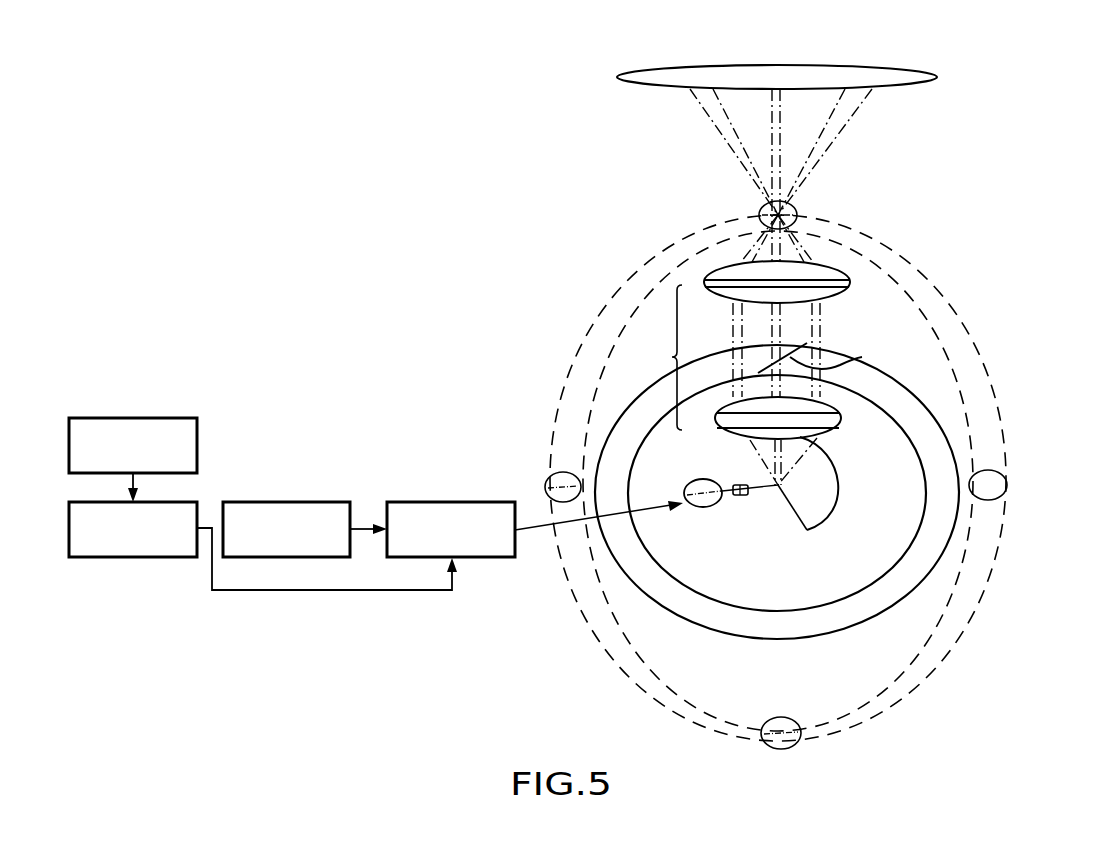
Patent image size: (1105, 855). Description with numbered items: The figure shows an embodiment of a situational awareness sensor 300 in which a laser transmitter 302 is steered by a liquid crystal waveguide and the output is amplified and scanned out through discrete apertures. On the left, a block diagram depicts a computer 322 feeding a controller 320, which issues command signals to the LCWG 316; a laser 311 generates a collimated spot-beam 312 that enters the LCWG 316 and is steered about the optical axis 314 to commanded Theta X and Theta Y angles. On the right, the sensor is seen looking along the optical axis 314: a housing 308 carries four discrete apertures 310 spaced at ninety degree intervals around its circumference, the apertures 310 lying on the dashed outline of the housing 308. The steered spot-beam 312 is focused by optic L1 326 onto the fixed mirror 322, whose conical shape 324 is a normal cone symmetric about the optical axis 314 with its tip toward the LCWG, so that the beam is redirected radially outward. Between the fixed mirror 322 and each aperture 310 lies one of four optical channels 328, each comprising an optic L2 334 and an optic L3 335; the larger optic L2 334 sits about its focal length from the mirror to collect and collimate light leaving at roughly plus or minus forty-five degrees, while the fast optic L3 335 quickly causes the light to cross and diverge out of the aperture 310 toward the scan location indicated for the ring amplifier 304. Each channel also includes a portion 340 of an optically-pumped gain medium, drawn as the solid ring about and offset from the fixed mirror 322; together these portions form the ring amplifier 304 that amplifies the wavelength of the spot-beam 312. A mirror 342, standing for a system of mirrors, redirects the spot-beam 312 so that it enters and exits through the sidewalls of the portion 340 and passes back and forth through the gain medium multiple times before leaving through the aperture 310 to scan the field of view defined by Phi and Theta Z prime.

The situational awareness sensor 300 is at (298, 252).
The laser transmitter 302 is at (183, 337).
The ring amplifier 304 is at (897, 320).
The housing 308 is at (598, 303).
The apertures 310 is at (798, 208).
The laser 311 is at (342, 501).
The spot-beam 312 is at (628, 77).
The optical axis 314 is at (733, 502).
The LCWG 316 is at (487, 560).
The controller 320 is at (133, 557).
The computer / fixed mirror 322 is at (90, 418).
The conical shape 324 is at (798, 518).
The optic L1 326 is at (748, 498).
The optical channels 328 is at (672, 357).
The optic L2 334 is at (838, 430).
The optic L3 335 is at (835, 267).
The portion of optically-pumped gain medium 340 is at (931, 427).
The mirror 342 is at (860, 357).
The optic L1 is at (738, 500).
The optic L2 is at (838, 413).
The optic L3 is at (838, 288).